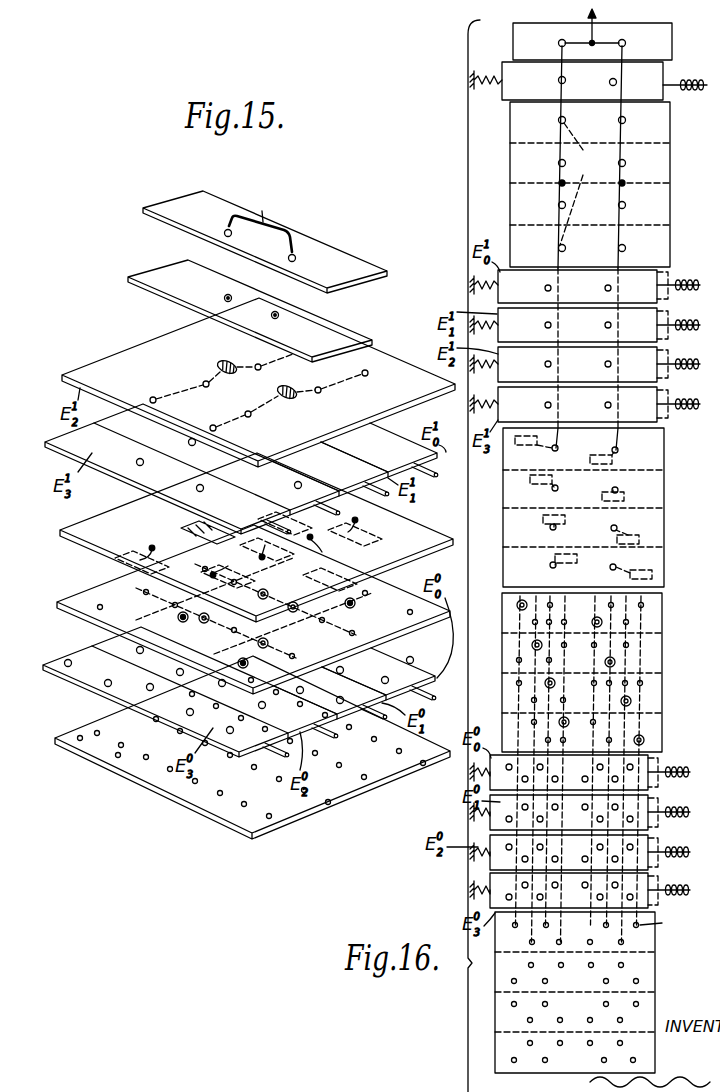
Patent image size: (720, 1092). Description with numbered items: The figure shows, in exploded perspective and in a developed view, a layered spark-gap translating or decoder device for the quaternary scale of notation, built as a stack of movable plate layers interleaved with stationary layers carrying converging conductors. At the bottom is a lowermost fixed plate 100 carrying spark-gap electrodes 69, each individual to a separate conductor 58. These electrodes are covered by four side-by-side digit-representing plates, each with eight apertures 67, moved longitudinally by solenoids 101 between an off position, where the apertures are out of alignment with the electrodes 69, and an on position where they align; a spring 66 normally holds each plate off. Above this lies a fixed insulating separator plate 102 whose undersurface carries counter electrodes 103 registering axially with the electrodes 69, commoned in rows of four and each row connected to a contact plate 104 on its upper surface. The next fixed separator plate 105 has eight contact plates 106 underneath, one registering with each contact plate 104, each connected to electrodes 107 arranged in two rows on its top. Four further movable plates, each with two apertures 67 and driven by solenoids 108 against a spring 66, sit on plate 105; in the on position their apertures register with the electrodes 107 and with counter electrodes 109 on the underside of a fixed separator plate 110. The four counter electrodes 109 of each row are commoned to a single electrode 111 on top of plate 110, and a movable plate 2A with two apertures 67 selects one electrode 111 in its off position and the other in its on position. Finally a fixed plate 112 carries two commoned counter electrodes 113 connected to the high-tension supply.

In FIG. 15, the fixed plate 112 is at (357, 268).
In FIG. 16, the fixed plate 112 is at (673, 49).
In FIG. 15, the counter electrodes 113 is at (226, 230).
In FIG. 16, the counter electrodes 113 is at (558, 43).
In FIG. 15, the movable power-representing plate 2A is at (158, 276).
In FIG. 16, the movable power-representing plate 2A is at (655, 95).
In FIG. 15, the apertures 67 is at (225, 296).
In FIG. 16, the apertures 67 is at (558, 80).
In FIG. 15, the fixed separator plate 110 is at (405, 375).
In FIG. 16, the fixed separator plate 110 is at (660, 177).
In FIG. 15, the single electrode 111 is at (222, 364).
In FIG. 16, the single electrode 111 is at (561, 181).
In FIG. 15, the counter electrodes 109 is at (200, 384).
In FIG. 16, the counter electrodes 109 is at (566, 163).
In FIG. 15, the fixed separator plate 105 is at (424, 532).
In FIG. 16, the fixed separator plate 105 is at (508, 534).
In FIG. 15, the contact plates 106 is at (322, 553).
In FIG. 16, the contact plates 106 is at (548, 497).
In FIG. 15, the electrodes 107 is at (152, 546).
In FIG. 16, the electrodes 107 is at (616, 487).
In FIG. 15, the fixed insulating separator plate 102 is at (85, 596).
In FIG. 16, the fixed insulating separator plate 102 is at (644, 662).
In FIG. 15, the counter electrodes 103 is at (140, 604).
In FIG. 16, the counter electrodes 103 is at (516, 605).
In FIG. 15, the contact plate 104 is at (183, 622).
In FIG. 16, the contact plate 104 is at (594, 621).
In FIG. 15, the lowermost fixed plate 100 is at (251, 747).
In FIG. 16, the lowermost fixed plate 100 is at (572, 992).
In FIG. 15, the conductor 58 is at (78, 764).
In FIG. 15, the spark-gap electrodes 69 is at (117, 754).
In FIG. 16, the spark-gap electrodes 69 is at (529, 943).
In FIG. 16, the solenoids 108 is at (591, 343).
In FIG. 16, the solenoids 101 is at (586, 824).
In FIG. 16, the spring 66 is at (476, 283).